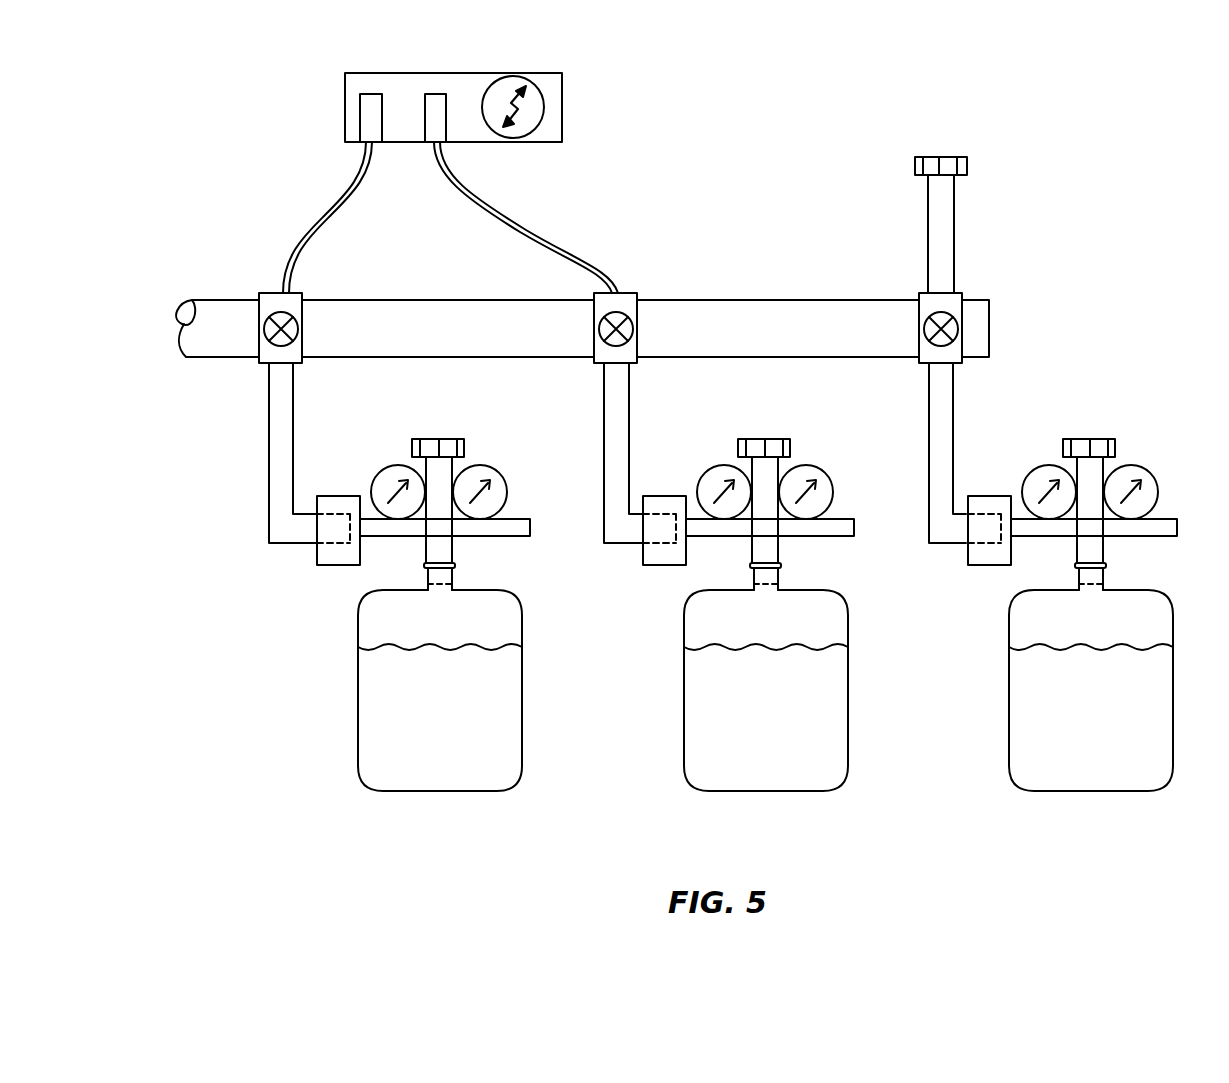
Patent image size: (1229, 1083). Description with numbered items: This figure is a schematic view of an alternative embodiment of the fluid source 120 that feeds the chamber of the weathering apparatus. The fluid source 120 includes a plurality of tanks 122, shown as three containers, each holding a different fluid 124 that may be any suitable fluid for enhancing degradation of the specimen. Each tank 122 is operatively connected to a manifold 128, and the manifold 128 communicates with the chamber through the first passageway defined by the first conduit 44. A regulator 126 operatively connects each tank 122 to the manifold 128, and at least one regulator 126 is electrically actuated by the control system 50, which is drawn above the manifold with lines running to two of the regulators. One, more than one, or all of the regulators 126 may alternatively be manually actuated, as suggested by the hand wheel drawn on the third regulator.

The fluid source 120 is at (972, 92).
The control system 50 is at (544, 73).
The first conduit 44 is at (192, 300).
The regulator 126 is at (296, 293).
The manifold 128 is at (418, 305).
The tank 122 is at (368, 788).
The fluid 124 is at (507, 768).